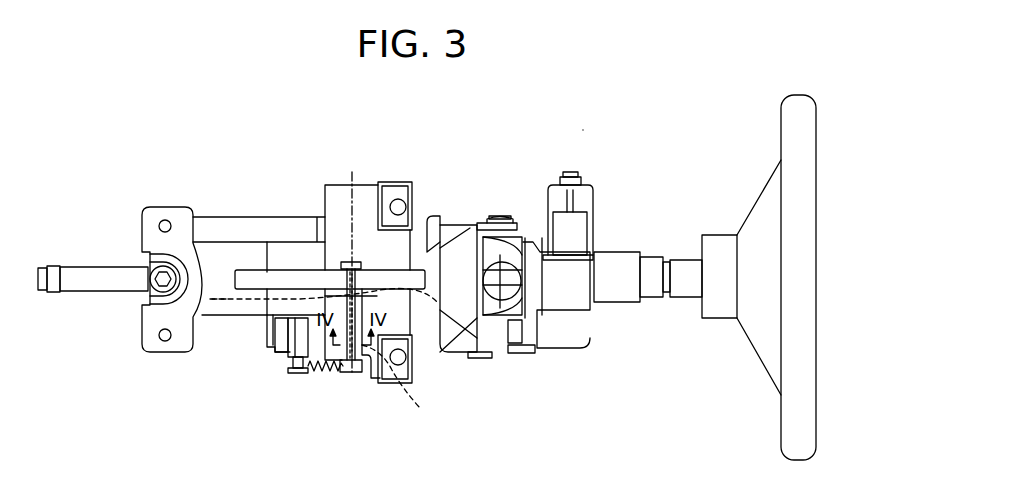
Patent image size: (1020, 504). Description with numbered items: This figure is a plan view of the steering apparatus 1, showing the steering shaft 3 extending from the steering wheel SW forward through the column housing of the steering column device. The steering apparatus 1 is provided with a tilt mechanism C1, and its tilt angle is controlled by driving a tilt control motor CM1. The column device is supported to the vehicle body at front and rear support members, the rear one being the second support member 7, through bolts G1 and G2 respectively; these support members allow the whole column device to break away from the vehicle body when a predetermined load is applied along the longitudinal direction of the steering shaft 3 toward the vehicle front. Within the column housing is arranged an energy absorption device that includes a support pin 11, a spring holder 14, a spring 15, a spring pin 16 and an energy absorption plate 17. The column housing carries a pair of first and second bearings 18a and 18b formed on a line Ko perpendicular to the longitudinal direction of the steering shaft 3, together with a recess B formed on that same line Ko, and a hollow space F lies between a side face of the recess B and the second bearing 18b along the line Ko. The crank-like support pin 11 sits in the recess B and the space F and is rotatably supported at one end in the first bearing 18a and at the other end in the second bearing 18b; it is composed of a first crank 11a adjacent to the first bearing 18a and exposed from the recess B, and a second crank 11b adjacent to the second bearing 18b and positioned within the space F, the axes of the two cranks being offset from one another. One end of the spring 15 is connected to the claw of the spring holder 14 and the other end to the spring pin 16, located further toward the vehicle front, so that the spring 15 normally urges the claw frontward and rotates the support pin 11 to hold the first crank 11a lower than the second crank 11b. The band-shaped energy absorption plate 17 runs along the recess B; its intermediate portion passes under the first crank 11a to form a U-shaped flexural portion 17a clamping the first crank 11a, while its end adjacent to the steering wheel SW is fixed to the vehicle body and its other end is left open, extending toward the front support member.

The steering apparatus 1 is at (588, 124).
The steering shaft 3 is at (97, 292).
The second support member 7 is at (413, 190).
The support pin 11 is at (437, 302).
The first crank 11a is at (375, 270).
The second crank 11b is at (406, 388).
The spring holder 14 is at (352, 378).
The spring 15 is at (321, 380).
The spring pin 16 is at (292, 377).
The energy absorption plate 17 is at (267, 270).
The U-shaped flexural portion 17a is at (433, 279).
The first bearing 18a is at (356, 262).
The second bearing 18b is at (370, 386).
The recess B is at (324, 270).
The tilt mechanism C1 is at (499, 217).
The tilt control motor CM1 is at (588, 183).
The hollow space F is at (212, 304).
The bolt G1 is at (149, 276).
The bolt G2 is at (407, 207).
The line Ko is at (350, 261).
The steering wheel SW is at (799, 95).